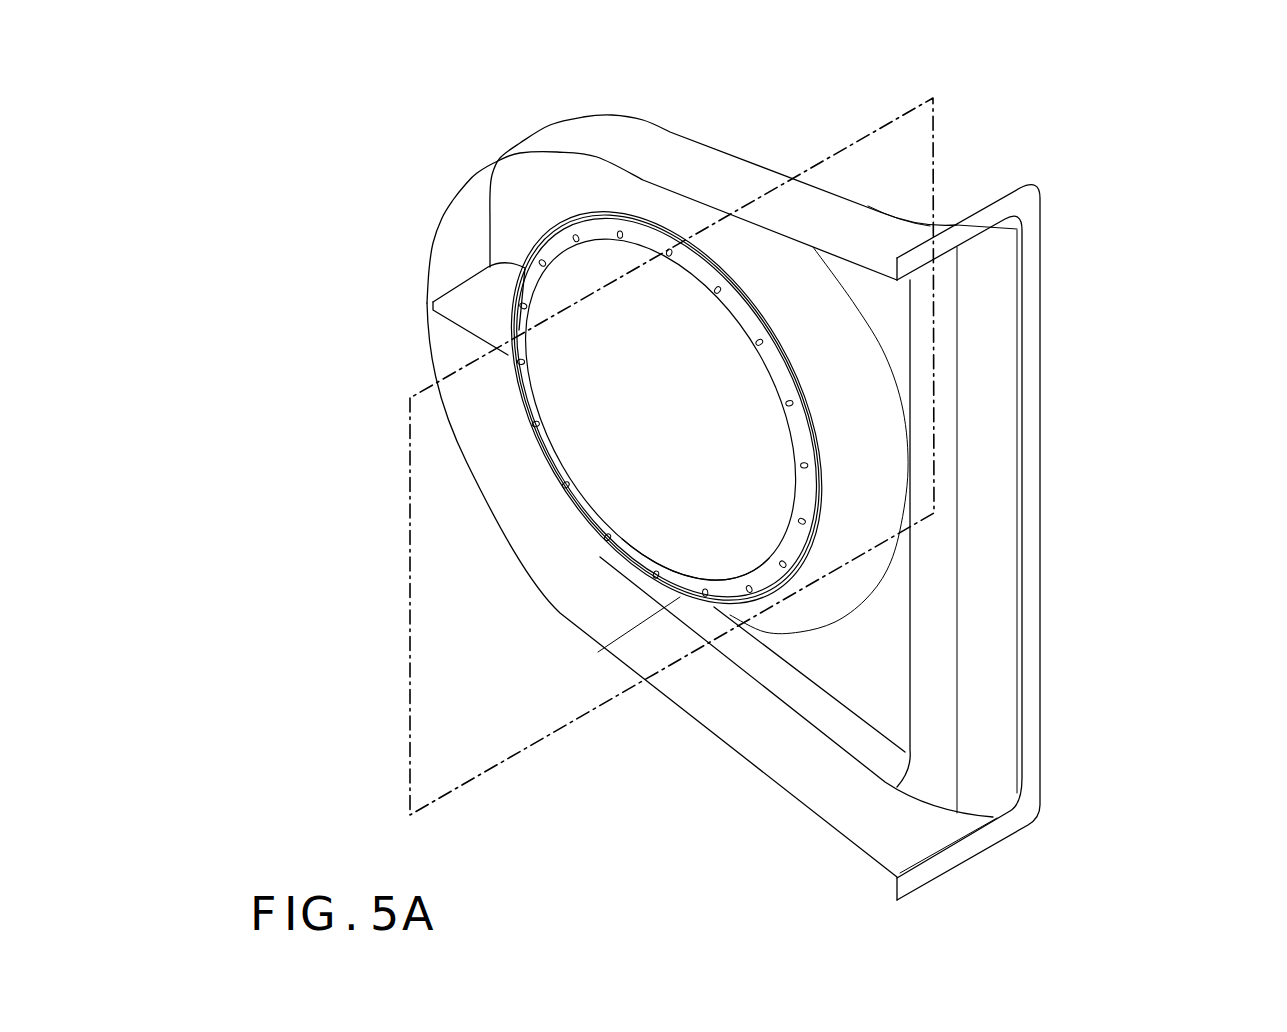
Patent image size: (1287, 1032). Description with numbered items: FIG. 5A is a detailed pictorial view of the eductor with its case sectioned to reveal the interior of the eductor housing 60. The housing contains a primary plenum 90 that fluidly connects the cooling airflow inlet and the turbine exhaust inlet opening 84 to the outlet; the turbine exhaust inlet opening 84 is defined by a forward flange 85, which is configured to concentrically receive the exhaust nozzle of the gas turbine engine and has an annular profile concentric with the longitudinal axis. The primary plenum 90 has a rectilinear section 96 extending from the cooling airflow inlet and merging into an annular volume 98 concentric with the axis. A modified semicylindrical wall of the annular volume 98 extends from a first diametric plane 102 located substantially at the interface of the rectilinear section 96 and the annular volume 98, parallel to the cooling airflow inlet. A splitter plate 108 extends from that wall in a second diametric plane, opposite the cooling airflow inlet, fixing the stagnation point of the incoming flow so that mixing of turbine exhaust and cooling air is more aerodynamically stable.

The eductor housing 60 is at (1097, 160).
The turbine exhaust inlet opening 84 is at (640, 397).
The forward flange 85 is at (653, 557).
The primary plenum 90 is at (700, 388).
The rectilinear section 96 is at (883, 663).
The annular volume 98 is at (563, 203).
The first diametric plane 102 is at (408, 597).
The splitter plate 108 is at (495, 312).